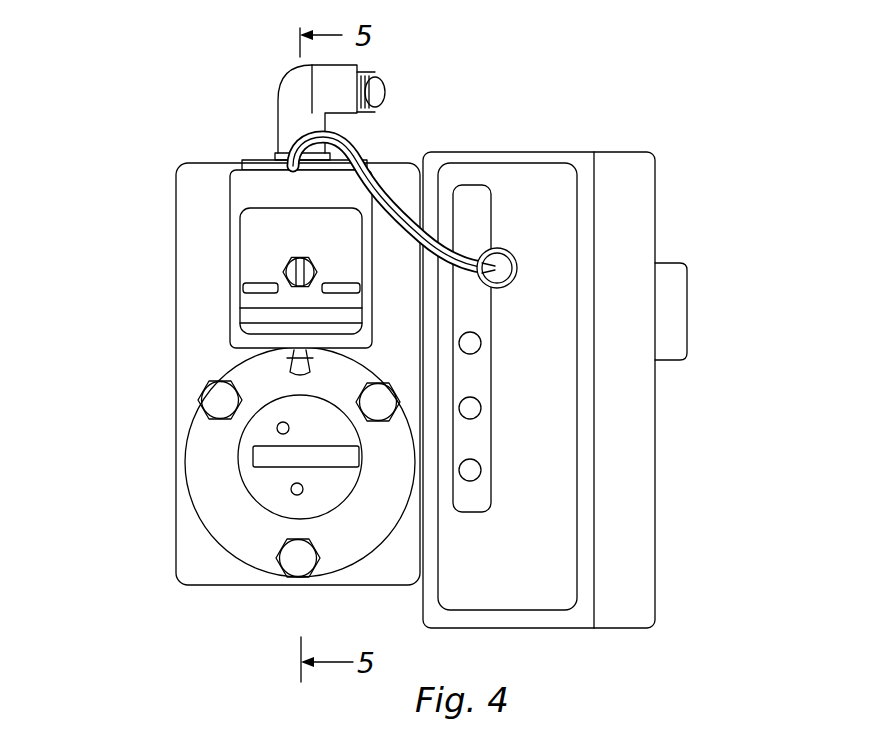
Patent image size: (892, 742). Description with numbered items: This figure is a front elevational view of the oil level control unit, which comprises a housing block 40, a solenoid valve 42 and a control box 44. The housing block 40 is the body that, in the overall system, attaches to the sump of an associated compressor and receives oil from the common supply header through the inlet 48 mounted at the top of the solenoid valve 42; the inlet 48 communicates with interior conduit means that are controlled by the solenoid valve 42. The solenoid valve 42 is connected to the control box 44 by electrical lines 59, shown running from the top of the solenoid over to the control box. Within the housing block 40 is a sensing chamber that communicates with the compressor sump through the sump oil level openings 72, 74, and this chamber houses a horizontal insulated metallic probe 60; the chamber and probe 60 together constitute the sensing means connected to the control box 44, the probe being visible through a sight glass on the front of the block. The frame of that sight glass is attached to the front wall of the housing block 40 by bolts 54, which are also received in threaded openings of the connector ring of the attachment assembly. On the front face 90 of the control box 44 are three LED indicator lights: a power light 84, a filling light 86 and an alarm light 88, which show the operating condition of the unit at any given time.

The housing block 40 is at (165, 369).
The solenoid valve 42 is at (219, 206).
The control box 44 is at (664, 191).
The inlet 48 is at (288, 82).
The bolts 54 is at (198, 403).
The electrical lines 59 is at (353, 148).
The probe 60 is at (253, 457).
The sump oil level opening 72 is at (291, 490).
The sump oil level opening 74 is at (277, 430).
The power indicator light 84 is at (480, 357).
The filling indicator light 86 is at (477, 418).
The alarm indicator light 88 is at (477, 482).
The front face 90 is at (550, 597).